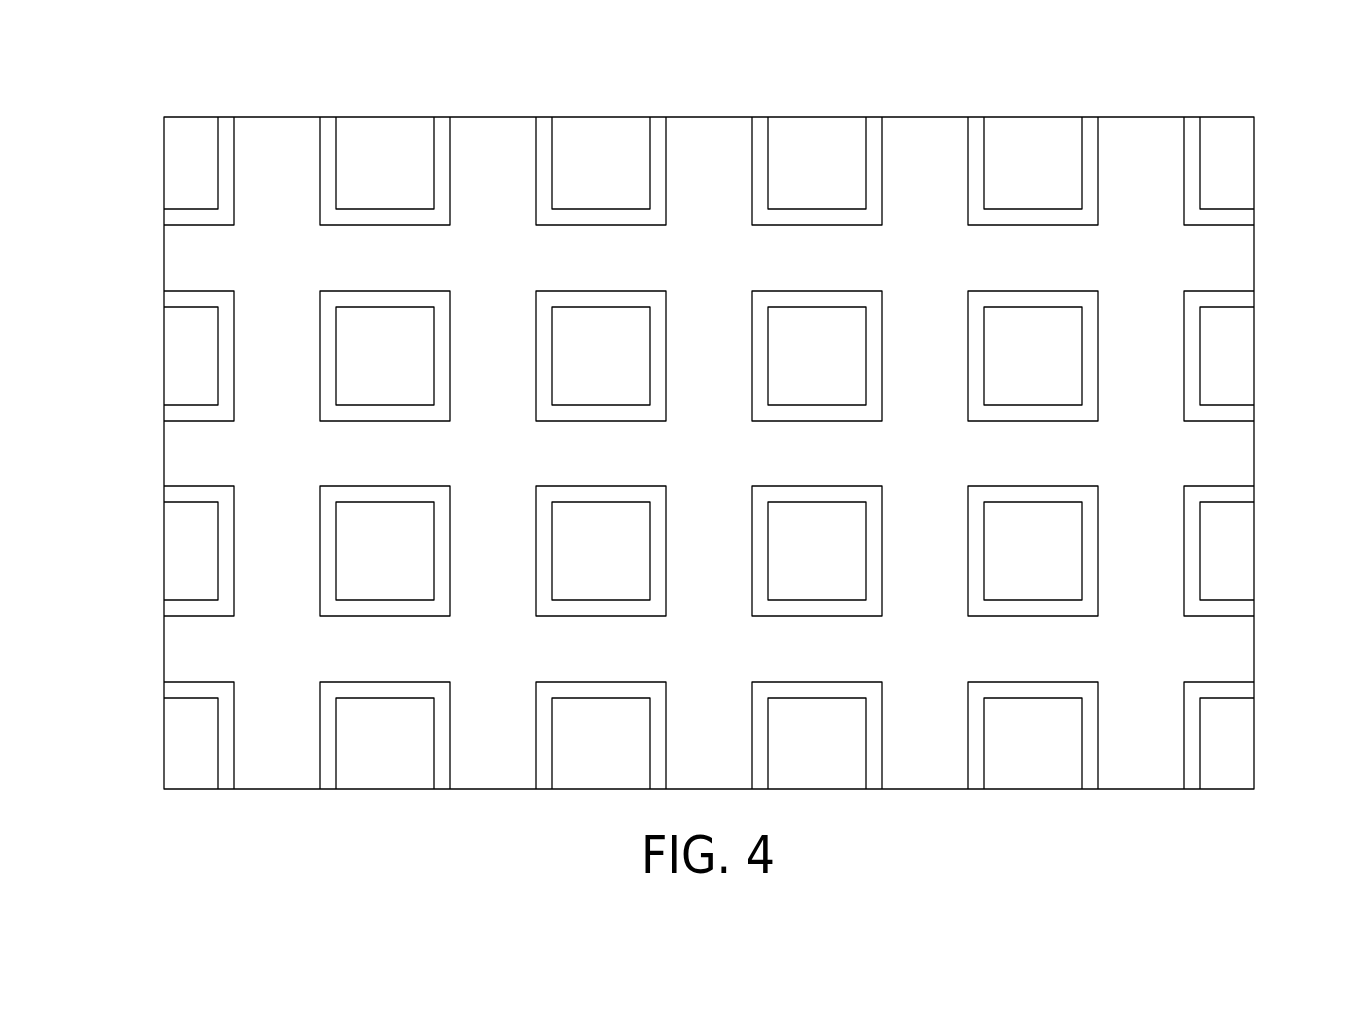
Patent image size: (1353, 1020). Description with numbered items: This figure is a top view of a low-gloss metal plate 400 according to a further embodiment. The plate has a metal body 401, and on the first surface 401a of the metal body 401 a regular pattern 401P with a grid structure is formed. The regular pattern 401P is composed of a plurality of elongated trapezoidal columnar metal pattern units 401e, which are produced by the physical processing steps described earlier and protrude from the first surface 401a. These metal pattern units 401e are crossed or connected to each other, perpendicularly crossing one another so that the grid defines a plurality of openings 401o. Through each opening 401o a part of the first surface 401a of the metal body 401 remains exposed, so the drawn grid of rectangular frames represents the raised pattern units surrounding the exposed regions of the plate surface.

The low-gloss metal plate 400 is at (95, 72).
The metal body 401 is at (164, 252).
The regular pattern 401P is at (913, 106).
The metal pattern units 401e is at (845, 274).
The first surface 401a is at (1031, 346).
The openings 401o is at (1082, 373).